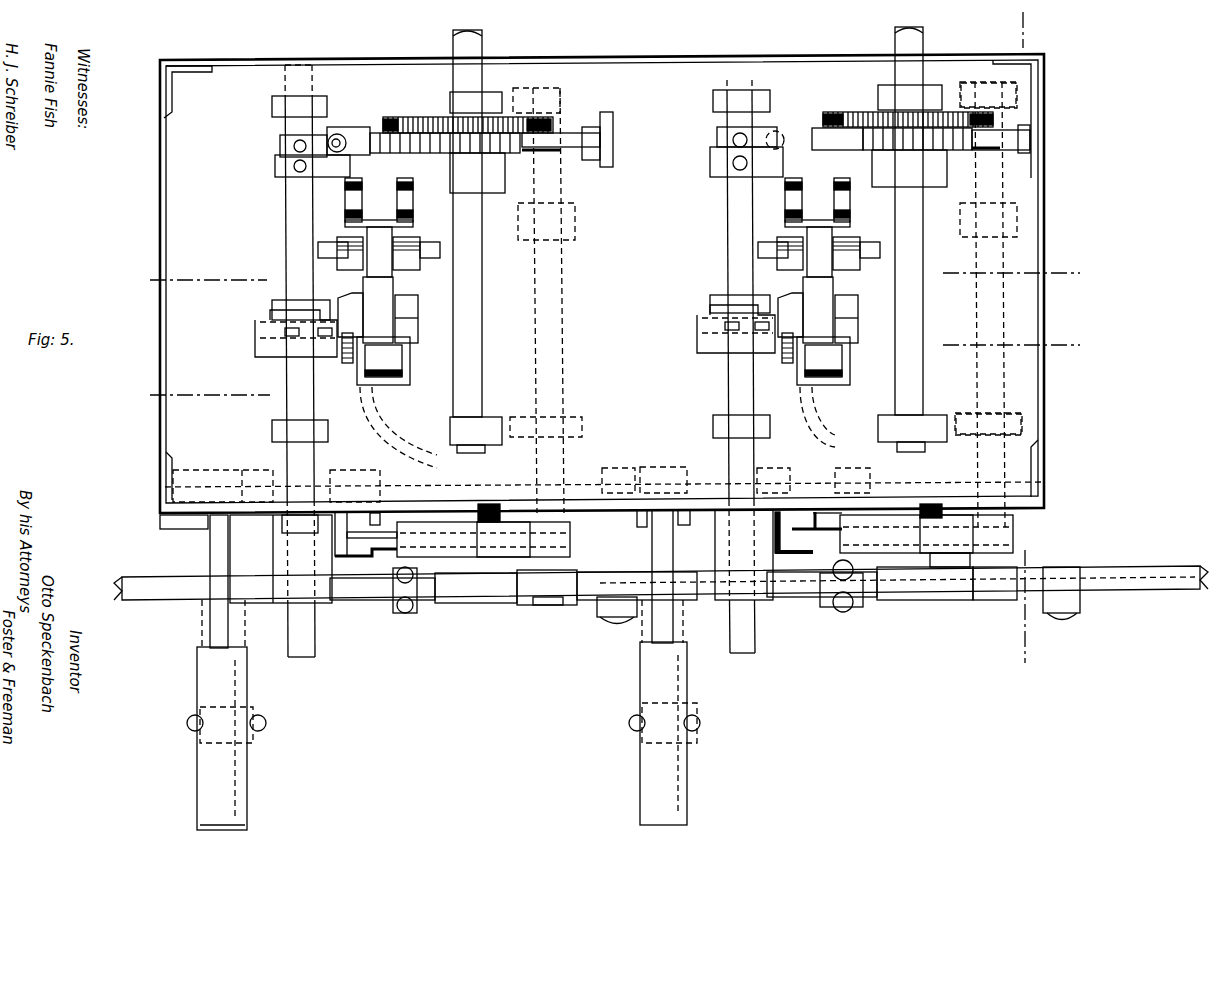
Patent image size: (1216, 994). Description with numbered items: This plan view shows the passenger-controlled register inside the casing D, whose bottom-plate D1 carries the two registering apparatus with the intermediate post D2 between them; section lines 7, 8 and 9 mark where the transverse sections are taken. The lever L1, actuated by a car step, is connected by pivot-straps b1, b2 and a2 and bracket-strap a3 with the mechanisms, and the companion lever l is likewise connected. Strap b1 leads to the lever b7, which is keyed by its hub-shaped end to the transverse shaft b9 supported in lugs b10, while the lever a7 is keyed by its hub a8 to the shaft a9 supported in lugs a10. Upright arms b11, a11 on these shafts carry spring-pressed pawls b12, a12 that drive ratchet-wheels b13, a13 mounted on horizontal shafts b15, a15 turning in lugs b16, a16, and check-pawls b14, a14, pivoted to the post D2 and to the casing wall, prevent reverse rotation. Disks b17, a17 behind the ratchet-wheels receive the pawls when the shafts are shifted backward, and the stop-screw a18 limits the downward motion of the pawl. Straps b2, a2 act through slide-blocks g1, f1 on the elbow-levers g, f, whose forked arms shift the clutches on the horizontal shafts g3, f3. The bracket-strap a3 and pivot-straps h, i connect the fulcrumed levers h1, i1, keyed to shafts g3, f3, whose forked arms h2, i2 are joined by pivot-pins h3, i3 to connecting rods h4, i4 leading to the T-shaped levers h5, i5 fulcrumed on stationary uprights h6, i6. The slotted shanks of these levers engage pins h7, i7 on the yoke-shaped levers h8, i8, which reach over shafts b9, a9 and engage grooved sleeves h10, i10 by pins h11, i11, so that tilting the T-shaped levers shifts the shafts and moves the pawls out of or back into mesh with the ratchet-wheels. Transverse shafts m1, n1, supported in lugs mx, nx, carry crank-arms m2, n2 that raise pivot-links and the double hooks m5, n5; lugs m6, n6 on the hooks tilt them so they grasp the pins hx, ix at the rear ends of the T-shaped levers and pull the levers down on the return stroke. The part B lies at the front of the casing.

The casing D is at (197, 290).
The bottom-plate D1 is at (598, 296).
The intermediate post D2 is at (606, 140).
The section line 9 is at (619, 275).
The section line 8 is at (619, 365).
The section line 7 is at (1009, 354).
The transverse shaft b9 is at (268, 660).
The lugs b10 is at (280, 430).
The upright arm b11 is at (282, 166).
The pawl b12 is at (355, 135).
The ratchet-wheel b13 is at (482, 145).
The check-pawl b14 is at (545, 155).
The horizontal shaft b15 is at (470, 42).
The lugs b16 is at (490, 462).
The disk b17 is at (396, 128).
The stop-screw a18 is at (340, 150).
The lugs mx is at (575, 95).
The lugs nx is at (1017, 92).
The crank-arm m2 is at (507, 225).
The crank-arm n2 is at (948, 224).
The transverse shaft m1 is at (550, 338).
The transverse shaft n1 is at (987, 360).
The double hook m5 is at (436, 202).
The double hook n5 is at (863, 202).
The lugs m6 is at (492, 272).
The lugs n6 is at (893, 256).
The transverse pin hx is at (450, 262).
The transverse pin ix is at (876, 226).
The T-shaped lever h5 is at (375, 292).
The T-shaped lever i5 is at (815, 290).
The yoke-shaped lever h8 is at (262, 558).
The yoke-shaped lever i8 is at (680, 338).
The sleeve h10 is at (280, 302).
The sleeve i10 is at (722, 300).
The pins h11 is at (322, 332).
The pins i11 is at (760, 327).
The stationary upright h6 is at (410, 312).
The stationary upright i6 is at (850, 312).
The pin h7 is at (408, 320).
The pin i7 is at (848, 320).
The pivot-pin h3 is at (392, 362).
The pivot-pin i3 is at (832, 360).
The connecting rod h4 is at (400, 372).
The connecting rod i4 is at (840, 372).
The forked arm h2 is at (395, 402).
The forked arm i2 is at (835, 402).
The transverse shaft a9 is at (746, 664).
The lugs a10 is at (718, 428).
The upright arm a11 is at (718, 140).
The pawl a12 is at (848, 145).
The ratchet-wheel a13 is at (920, 142).
The check-pawl a14 is at (992, 150).
The horizontal shaft a15 is at (930, 312).
The lugs a16 is at (932, 455).
The disk a17 is at (1055, 112).
The lever L1 is at (1168, 570).
The fulcrumed lever h1 is at (218, 680).
The lever l is at (248, 790).
The pivot-strap h is at (250, 728).
The fulcrumed lever i1 is at (660, 678).
The pivot-strap i is at (695, 730).
The elbow-lever g is at (353, 534).
The slide-block g1 is at (495, 520).
The horizontal shaft g3 is at (575, 485).
The horizontal shaft f3 is at (645, 498).
The bracket B is at (602, 498).
The lever b7 is at (372, 600).
The pivot-strap b1 is at (410, 612).
The pivot-strap b2 is at (495, 575).
The hub-shaped end a8 is at (740, 575).
The lever a7 is at (803, 583).
The pivot-strap a2 is at (940, 560).
The bracket-strap a3 is at (1050, 608).
The elbow-lever f is at (930, 512).
The slide-block f1 is at (965, 535).